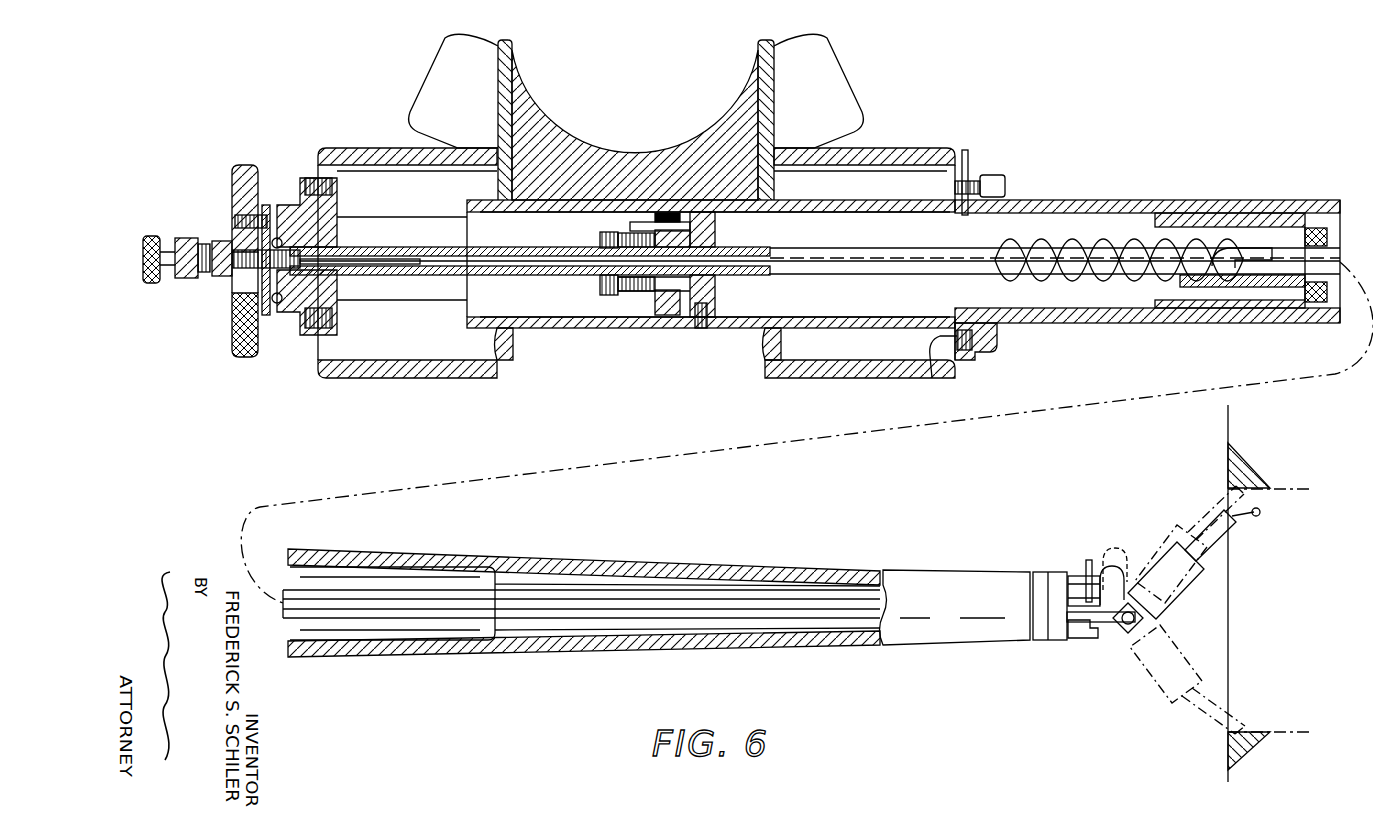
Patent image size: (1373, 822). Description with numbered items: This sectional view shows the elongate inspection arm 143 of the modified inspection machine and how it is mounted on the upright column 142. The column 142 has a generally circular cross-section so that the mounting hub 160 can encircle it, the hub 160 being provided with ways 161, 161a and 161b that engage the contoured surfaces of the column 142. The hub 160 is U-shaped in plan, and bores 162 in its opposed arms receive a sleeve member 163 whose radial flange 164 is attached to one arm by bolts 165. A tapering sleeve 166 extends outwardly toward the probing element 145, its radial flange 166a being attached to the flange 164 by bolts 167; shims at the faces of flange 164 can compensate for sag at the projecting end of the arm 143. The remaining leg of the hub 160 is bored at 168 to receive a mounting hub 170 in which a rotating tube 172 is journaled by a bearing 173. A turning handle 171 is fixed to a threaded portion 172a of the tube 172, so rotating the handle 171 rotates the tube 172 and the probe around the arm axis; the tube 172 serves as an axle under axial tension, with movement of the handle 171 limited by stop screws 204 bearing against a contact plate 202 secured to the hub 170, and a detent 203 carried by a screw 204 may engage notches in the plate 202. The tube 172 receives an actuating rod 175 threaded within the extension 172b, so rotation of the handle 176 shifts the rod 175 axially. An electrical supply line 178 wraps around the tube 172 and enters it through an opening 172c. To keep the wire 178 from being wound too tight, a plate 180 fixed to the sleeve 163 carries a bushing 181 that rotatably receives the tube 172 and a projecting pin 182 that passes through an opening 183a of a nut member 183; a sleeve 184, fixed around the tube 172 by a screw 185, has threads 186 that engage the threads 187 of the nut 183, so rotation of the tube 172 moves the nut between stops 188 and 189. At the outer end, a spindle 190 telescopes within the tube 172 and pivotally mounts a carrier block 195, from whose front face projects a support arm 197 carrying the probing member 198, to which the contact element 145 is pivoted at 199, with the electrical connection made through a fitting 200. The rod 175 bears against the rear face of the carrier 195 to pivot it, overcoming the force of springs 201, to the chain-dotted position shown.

The upright column 142 is at (722, 58).
The elongate inspection arm 143 is at (788, 564).
The probing element 145 is at (1265, 513).
The mounting hub 160 is at (374, 146).
The way 161 is at (563, 193).
The way 161a is at (510, 125).
The way 161b is at (766, 106).
The bore 162 is at (515, 324).
The sleeve member 163 is at (645, 320).
The radial flange 164 is at (965, 353).
The bolt 165 is at (935, 372).
The tapering sleeve 166 is at (1155, 202).
The radial flange 166a is at (990, 353).
The bolt 167 is at (995, 193).
The bore 168 is at (330, 315).
The mounting hub 170 is at (297, 200).
The turning handle 171 is at (233, 193).
The rotating tube 172 is at (370, 249).
The threaded portion 172a is at (214, 277).
The extension 172b is at (193, 276).
The opening 172c is at (1262, 247).
The bearing 173 is at (297, 272).
The actuating rod 175 is at (420, 278).
The handle 176 is at (158, 281).
The electrical supply line 178 is at (968, 155).
The plate 180 is at (717, 290).
The bushing 181 is at (716, 247).
The projecting pin 182 is at (650, 217).
The nut member 183 is at (672, 315).
The opening 183a is at (675, 217).
The sleeve 184 is at (600, 243).
The screw 185 is at (600, 288).
The threads 186 is at (640, 292).
The threads 187 is at (650, 292).
The stop 188 is at (688, 318).
The stop 189 is at (627, 291).
The spindle 190 is at (1040, 641).
The carrier block 195 is at (1060, 576).
The support arm 197 is at (1108, 623).
The probing member 198 is at (1182, 580).
The pivot 199 is at (1230, 540).
The fitting 200 is at (1087, 578).
The spring 201 is at (1077, 639).
The contact plate 202 is at (283, 318).
The detent 203 is at (262, 213).
The stop screw 204 is at (235, 222).